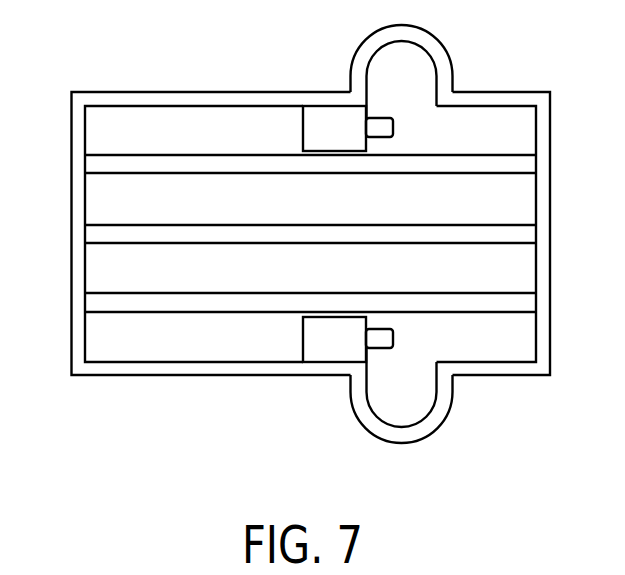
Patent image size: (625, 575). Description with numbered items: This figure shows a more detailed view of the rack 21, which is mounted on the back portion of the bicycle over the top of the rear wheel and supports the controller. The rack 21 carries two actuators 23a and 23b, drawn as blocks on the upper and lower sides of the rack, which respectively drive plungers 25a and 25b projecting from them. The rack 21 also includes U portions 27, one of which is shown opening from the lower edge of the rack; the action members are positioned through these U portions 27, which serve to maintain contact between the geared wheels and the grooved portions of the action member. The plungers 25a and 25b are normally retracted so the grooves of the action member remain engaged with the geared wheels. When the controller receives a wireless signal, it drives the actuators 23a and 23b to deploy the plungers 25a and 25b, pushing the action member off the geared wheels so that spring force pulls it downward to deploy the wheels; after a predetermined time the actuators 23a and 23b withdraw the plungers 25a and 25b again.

The rack 21 is at (110, 97).
The actuator 23a is at (308, 123).
The actuator 23b is at (312, 347).
The plunger 25a is at (380, 118).
The plunger 25b is at (380, 348).
The U portion 27 is at (437, 428).